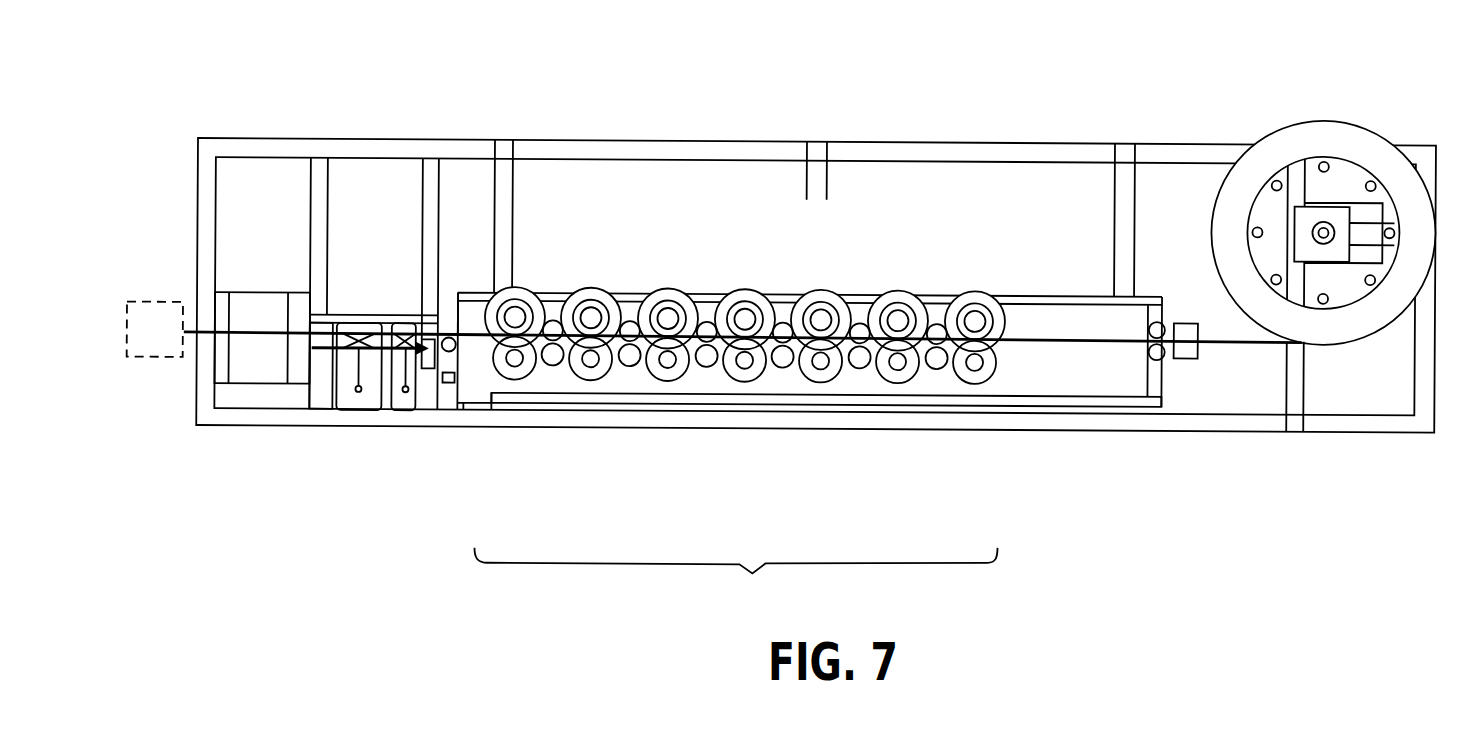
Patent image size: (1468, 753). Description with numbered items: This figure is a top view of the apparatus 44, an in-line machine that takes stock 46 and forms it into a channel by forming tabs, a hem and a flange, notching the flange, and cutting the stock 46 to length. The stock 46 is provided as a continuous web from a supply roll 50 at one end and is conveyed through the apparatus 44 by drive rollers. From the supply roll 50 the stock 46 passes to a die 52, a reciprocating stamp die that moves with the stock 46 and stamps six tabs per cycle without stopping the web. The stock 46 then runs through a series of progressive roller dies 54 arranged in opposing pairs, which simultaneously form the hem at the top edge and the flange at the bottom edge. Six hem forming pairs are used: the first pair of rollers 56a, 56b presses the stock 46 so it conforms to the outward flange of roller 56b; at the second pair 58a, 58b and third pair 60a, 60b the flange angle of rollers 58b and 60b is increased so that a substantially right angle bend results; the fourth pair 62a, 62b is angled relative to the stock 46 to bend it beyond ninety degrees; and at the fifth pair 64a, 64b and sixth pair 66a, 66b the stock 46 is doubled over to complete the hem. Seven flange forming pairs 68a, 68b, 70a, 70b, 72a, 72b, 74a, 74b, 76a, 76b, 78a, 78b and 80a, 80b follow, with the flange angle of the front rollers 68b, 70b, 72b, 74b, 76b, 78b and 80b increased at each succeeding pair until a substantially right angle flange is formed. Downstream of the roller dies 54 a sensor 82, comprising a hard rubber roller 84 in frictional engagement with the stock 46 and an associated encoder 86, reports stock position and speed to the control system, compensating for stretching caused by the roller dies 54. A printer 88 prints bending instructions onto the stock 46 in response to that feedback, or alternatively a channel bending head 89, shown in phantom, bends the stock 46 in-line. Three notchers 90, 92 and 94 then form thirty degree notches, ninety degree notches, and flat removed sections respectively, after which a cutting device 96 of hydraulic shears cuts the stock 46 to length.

The apparatus 44 is at (1093, 124).
The stock 46 is at (1212, 330).
The supply roll 50 is at (1323, 114).
The die 52 is at (1198, 351).
The progressive roller dies 54 is at (785, 561).
The first hem forming roller 56a is at (941, 363).
The first hem forming roller 56b is at (939, 316).
The second hem forming roller 58a is at (864, 363).
The second hem forming roller 58b is at (862, 316).
The third hem forming roller 60a is at (787, 363).
The third hem forming roller 60b is at (787, 316).
The fourth hem forming roller 62a is at (711, 363).
The fourth hem forming roller 62b is at (710, 316).
The fifth hem forming roller 64a is at (634, 363).
The fifth hem forming roller 64b is at (632, 316).
The sixth hem forming roller 66a is at (557, 363).
The sixth hem forming roller 66b is at (555, 316).
The first flange forming roller 68a is at (984, 377).
The first flange forming front roller 68b is at (983, 284).
The second flange forming roller 70a is at (906, 377).
The second flange forming front roller 70b is at (907, 285).
The third flange forming roller 72a is at (829, 377).
The third flange forming front roller 72b is at (832, 285).
The fourth flange forming roller 74a is at (750, 377).
The fourth flange forming front roller 74b is at (755, 291).
The fifth flange forming roller 76a is at (673, 377).
The fifth flange forming front roller 76b is at (679, 291).
The sixth flange forming roller 78a is at (596, 377).
The sixth flange forming front roller 78b is at (603, 291).
The seventh flange forming roller 80a is at (522, 377).
The seventh flange forming front roller 80b is at (525, 287).
The sensor 82 is at (449, 308).
The hard rubber roller 84 is at (457, 350).
The encoder 86 is at (451, 382).
The printer 88 is at (424, 368).
The channel bending head 89 is at (153, 302).
The first notcher 90 is at (397, 324).
The second notcher 92 is at (377, 324).
The third notcher 94 is at (328, 324).
The cutting device 96 is at (275, 307).